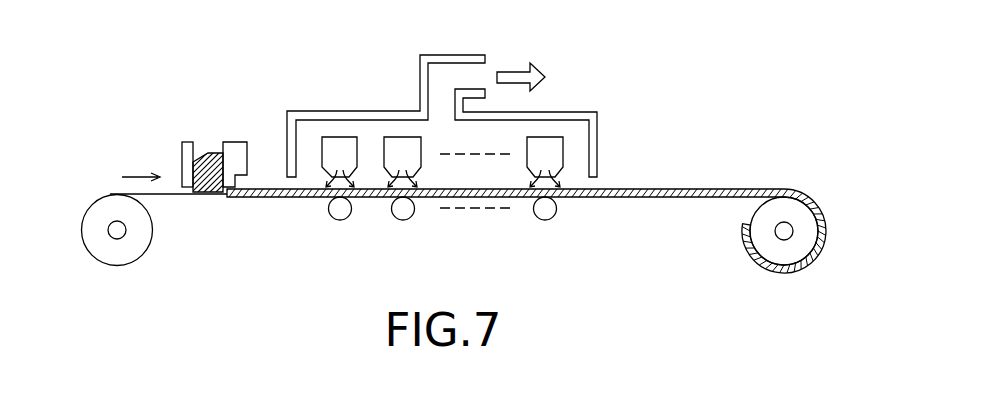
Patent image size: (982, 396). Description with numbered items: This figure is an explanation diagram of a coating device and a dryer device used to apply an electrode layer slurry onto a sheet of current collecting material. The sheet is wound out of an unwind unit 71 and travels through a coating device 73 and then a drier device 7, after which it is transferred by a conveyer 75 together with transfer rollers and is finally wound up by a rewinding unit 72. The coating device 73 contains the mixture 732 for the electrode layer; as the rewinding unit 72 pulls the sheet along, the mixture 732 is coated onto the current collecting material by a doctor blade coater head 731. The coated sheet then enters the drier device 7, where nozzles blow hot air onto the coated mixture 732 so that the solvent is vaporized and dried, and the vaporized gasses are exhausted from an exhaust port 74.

The drier device 7 is at (370, 88).
The unwind unit 71 is at (115, 265).
The rewinding unit 72 is at (790, 256).
The coating device 73 is at (172, 147).
The doctor blade coater head 731 is at (236, 142).
The mixture 732 is at (212, 154).
The exhaust port 74 is at (481, 55).
The conveyer 75 is at (627, 198).